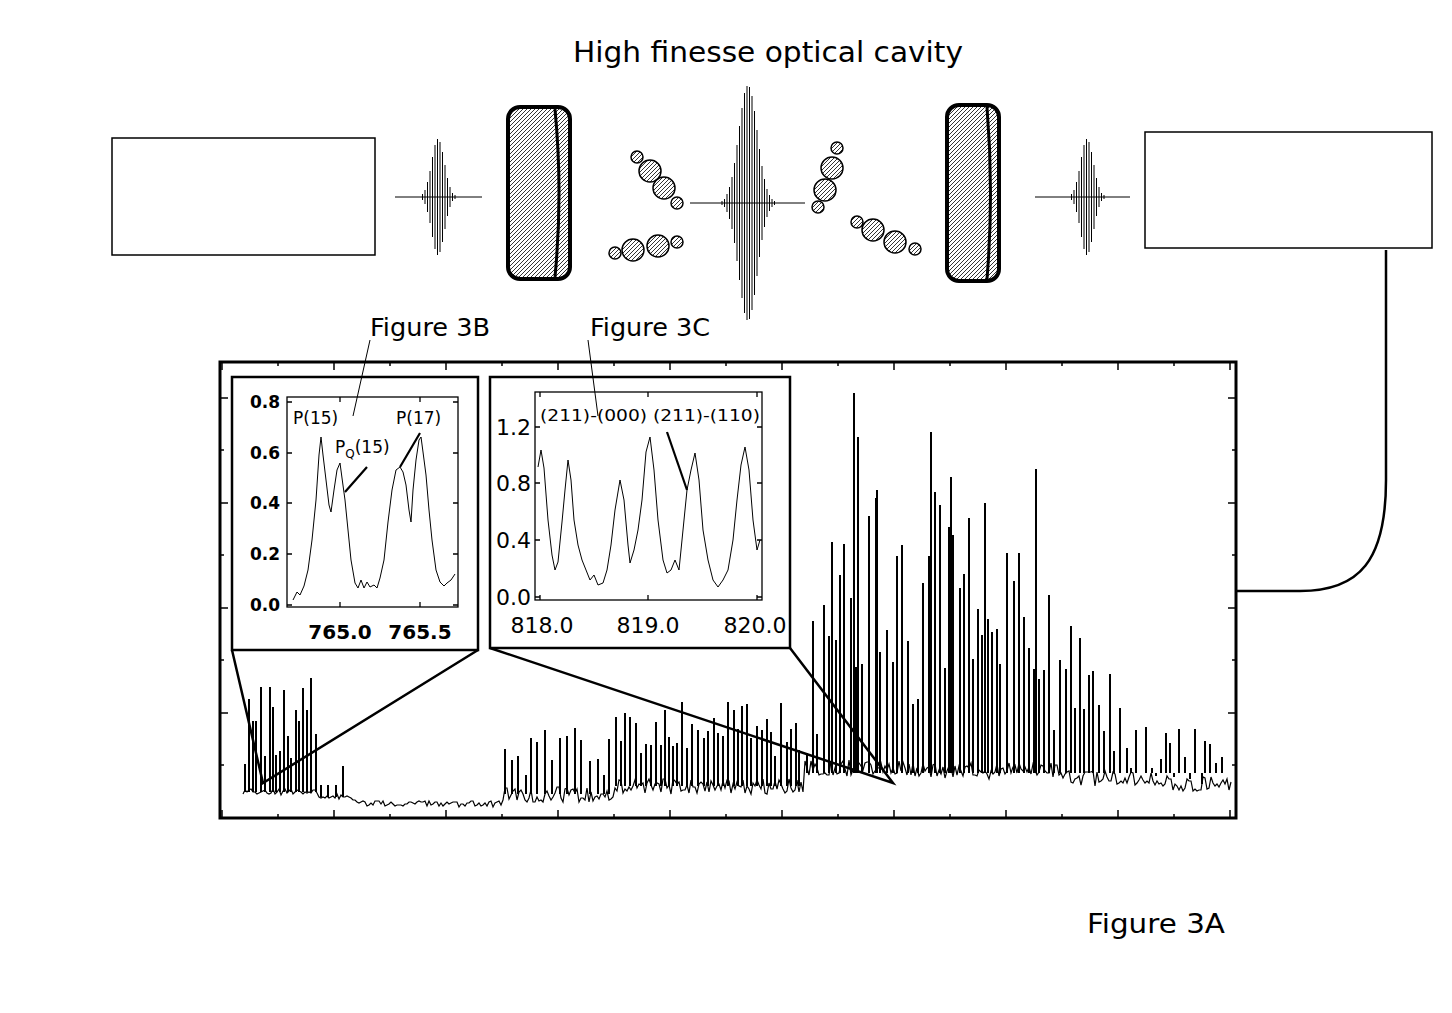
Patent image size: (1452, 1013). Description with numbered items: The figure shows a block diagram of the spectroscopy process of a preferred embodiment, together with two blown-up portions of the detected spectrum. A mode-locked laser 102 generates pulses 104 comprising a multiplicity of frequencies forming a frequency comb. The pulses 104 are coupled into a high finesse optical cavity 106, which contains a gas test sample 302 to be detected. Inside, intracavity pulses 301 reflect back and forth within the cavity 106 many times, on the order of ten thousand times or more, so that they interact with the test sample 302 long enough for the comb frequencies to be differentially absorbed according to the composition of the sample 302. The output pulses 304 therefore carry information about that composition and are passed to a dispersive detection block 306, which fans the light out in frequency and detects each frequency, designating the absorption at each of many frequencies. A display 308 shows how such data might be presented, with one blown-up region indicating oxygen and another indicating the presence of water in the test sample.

The mode-locked laser 102 is at (243, 196).
The pulses 104 is at (438, 184).
The high finesse optical cavity 106 is at (753, 202).
The intracavity pulses 301 is at (753, 201).
The gas test sample 302 is at (903, 223).
The output pulses 304 is at (1082, 184).
The dispersive detection block 306 is at (1288, 190).
The display 308 is at (681, 643).